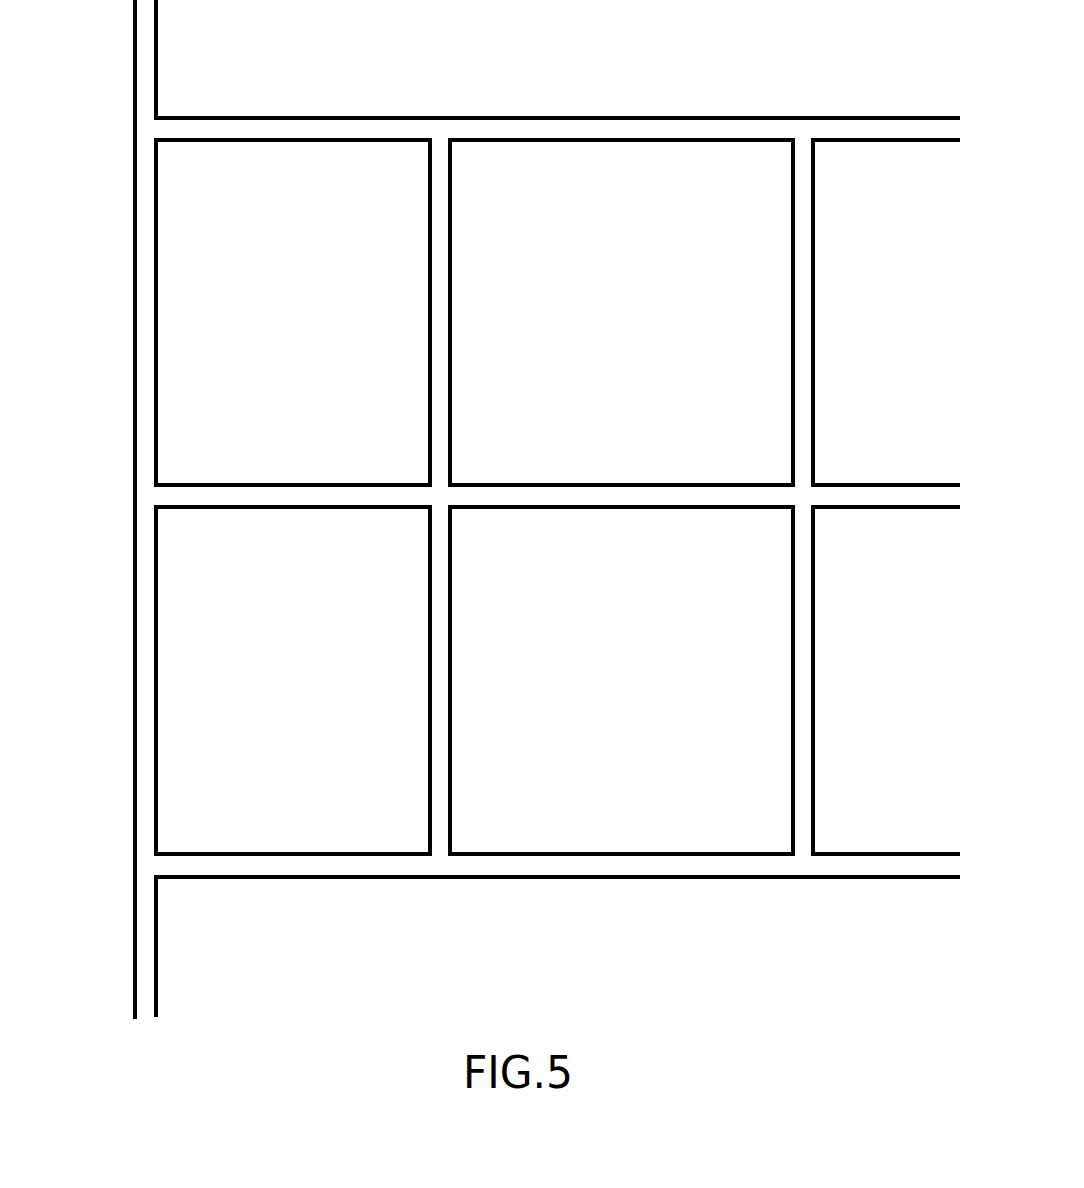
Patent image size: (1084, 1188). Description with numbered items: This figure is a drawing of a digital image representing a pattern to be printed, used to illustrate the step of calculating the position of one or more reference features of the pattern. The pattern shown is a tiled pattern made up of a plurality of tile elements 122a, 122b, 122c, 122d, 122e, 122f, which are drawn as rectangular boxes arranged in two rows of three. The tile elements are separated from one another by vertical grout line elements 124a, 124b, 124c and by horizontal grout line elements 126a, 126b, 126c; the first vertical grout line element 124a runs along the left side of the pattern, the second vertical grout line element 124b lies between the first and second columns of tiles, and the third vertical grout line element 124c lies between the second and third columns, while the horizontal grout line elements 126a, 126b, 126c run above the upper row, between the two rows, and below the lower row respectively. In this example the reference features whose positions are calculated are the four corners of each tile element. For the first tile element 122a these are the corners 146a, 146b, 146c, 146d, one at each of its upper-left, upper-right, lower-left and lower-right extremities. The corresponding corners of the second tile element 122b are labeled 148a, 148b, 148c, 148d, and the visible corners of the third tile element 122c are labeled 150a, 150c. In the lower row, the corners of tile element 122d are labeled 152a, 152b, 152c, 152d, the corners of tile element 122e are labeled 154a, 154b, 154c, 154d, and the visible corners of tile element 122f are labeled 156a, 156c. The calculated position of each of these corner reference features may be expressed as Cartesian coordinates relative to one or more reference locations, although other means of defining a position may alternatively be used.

The tile element 122a is at (334, 330).
The tile element 122b is at (649, 330).
The tile element 122c is at (952, 329).
The tile element 122d is at (341, 689).
The tile element 122e is at (649, 689).
The tile element 122f is at (953, 687).
The vertical grout line element 124a is at (153, 280).
The vertical grout line element 124b is at (433, 188).
The vertical grout line element 124c is at (805, 273).
The horizontal grout line element 126a is at (638, 137).
The horizontal grout line element 126b is at (550, 502).
The horizontal grout line element 126c is at (587, 860).
The corner 146a is at (161, 145).
The corner 146b is at (426, 145).
The corner 146c is at (161, 480).
The corner 146d is at (425, 480).
The corner of tile 122b 148a is at (455, 145).
The corner of tile 122b 148b is at (789, 145).
The corner of tile 122b 148c is at (455, 480).
The corner of tile 122b 148d is at (789, 480).
The corner of tile 122c 150a is at (818, 145).
The corner of tile 122c 150c is at (818, 480).
The corner of tile 122d 152a is at (161, 512).
The corner of tile 122d 152b is at (426, 512).
The corner of tile 122d 152c is at (161, 849).
The corner of tile 122d 152d is at (425, 849).
The corner of tile 122e 154a is at (456, 512).
The corner of tile 122e 154b is at (789, 512).
The corner of tile 122e 154c is at (455, 849).
The corner of tile 122e 154d is at (789, 849).
The corner of tile 122f 156a is at (817, 512).
The corner of tile 122f 156c is at (818, 849).